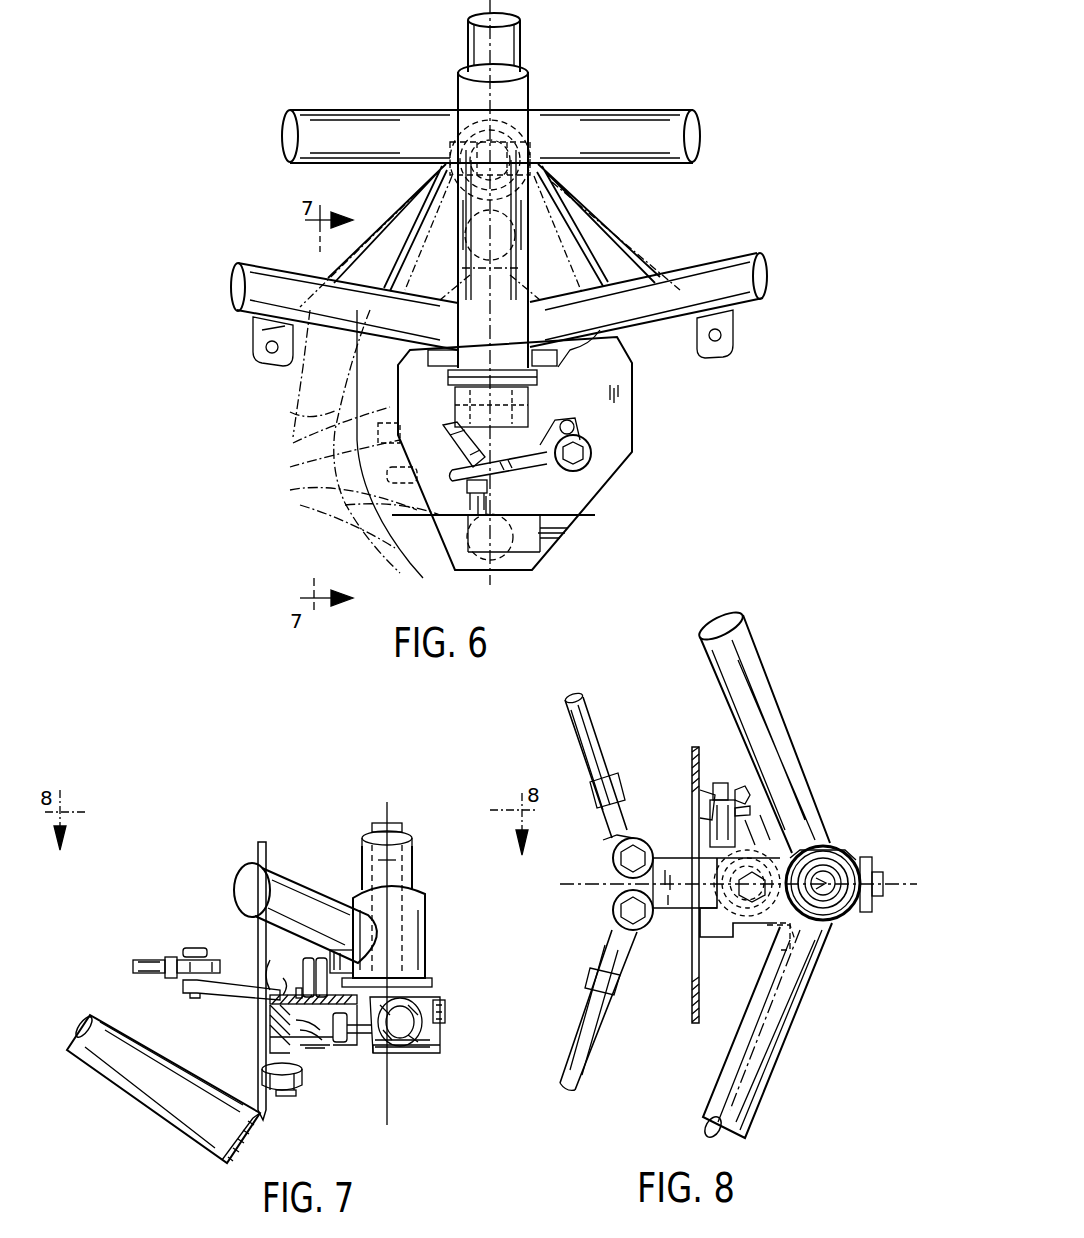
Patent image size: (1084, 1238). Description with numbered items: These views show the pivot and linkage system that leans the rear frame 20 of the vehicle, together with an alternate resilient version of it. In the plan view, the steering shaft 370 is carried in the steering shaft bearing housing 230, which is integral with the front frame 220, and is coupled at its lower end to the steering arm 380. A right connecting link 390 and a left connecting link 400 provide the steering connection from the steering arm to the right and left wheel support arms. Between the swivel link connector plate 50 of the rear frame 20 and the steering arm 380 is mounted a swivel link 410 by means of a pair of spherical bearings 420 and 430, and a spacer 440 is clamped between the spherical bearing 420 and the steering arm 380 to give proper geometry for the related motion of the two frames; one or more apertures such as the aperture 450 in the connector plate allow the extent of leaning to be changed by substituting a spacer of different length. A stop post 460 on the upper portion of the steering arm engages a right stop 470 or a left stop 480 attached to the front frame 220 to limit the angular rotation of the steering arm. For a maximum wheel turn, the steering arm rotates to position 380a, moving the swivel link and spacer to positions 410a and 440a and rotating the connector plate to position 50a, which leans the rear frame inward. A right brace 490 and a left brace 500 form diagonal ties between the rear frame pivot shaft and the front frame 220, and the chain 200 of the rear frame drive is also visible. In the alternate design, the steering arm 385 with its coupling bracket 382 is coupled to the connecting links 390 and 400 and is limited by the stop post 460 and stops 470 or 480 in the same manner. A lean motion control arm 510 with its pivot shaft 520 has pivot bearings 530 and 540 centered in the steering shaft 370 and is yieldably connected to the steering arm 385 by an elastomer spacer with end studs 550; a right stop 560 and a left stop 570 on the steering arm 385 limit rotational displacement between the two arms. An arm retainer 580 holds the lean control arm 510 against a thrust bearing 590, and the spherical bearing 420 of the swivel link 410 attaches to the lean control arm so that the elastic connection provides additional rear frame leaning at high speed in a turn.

In FIG. 6, the rear frame 20 is at (572, 516).
In FIG. 6, the swivel link connector plate 50 is at (633, 398).
In FIG. 7, the swivel link connector plate 50 is at (258, 1096).
In FIG. 8, the swivel link connector plate 50 is at (690, 757).
In FIG. 6, the swivel link connector plate position 50a is at (320, 405).
In FIG. 7, the chain 200 is at (133, 1103).
In FIG. 6, the front frame 220 is at (378, 108).
In FIG. 7, the front frame 220 is at (280, 884).
In FIG. 8, the front frame 220 is at (760, 664).
In FIG. 6, the steering shaft bearing housing 230 is at (530, 102).
In FIG. 7, the steering shaft bearing housing 230 is at (424, 922).
In FIG. 8, the steering shaft bearing housing 230 is at (850, 849).
In FIG. 6, the steering shaft 370 is at (521, 44).
In FIG. 7, the steering shaft 370 is at (413, 883).
In FIG. 8, the steering shaft 370 is at (830, 916).
In FIG. 6, the steering arm 380 is at (455, 414).
In FIG. 6, the steering arm position 380a is at (335, 430).
In FIG. 7, the coupling bracket 382 is at (237, 1000).
In FIG. 7, the steering arm 385 is at (297, 992).
In FIG. 7, the right connecting link 390 is at (155, 958).
In FIG. 8, the right connecting link 390 is at (590, 1052).
In FIG. 8, the left connecting link 400 is at (578, 744).
In FIG. 6, the swivel link 410 is at (556, 480).
In FIG. 7, the swivel link 410 is at (288, 1096).
In FIG. 8, the swivel link 410 is at (703, 834).
In FIG. 6, the swivel link position 410a is at (345, 505).
In FIG. 6, the spherical bearing 420 is at (447, 520).
In FIG. 6, the spherical bearing 430 is at (593, 458).
In FIG. 6, the spacer 440 is at (470, 492).
In FIG. 7, the spacer 440 is at (313, 1074).
In FIG. 6, the spacer position 440a is at (340, 468).
In FIG. 6, the aperture 450 is at (576, 428).
In FIG. 6, the stop post 460 is at (614, 342).
In FIG. 7, the stop post 460 is at (285, 992).
In FIG. 8, the stop post 460 is at (742, 905).
In FIG. 6, the right stop 470 is at (448, 375).
In FIG. 7, the right stop 470 is at (317, 950).
In FIG. 8, the right stop 470 is at (765, 950).
In FIG. 6, the left stop 480 is at (540, 377).
In FIG. 8, the left stop 480 is at (762, 818).
In FIG. 6, the right brace 490 is at (372, 240).
In FIG. 6, the left brace 500 is at (608, 232).
In FIG. 7, the lean motion control arm 510 is at (343, 1040).
In FIG. 7, the pivot shaft 520 is at (397, 822).
In FIG. 8, the pivot shaft 520 is at (837, 927).
In FIG. 7, the pivot bearing 530 is at (400, 1054).
In FIG. 7, the pivot bearing 540 is at (405, 838).
In FIG. 8, the pivot bearing 540 is at (823, 850).
In FIG. 7, the elastomer spacer end studs 550 is at (307, 1024).
In FIG. 7, the right stop 560 is at (347, 1036).
In FIG. 8, the right stop 560 is at (765, 937).
In FIG. 8, the left stop 570 is at (763, 830).
In FIG. 7, the arm retainer 580 is at (443, 1040).
In FIG. 8, the arm retainer 580 is at (875, 867).
In FIG. 7, the thrust bearing 590 is at (417, 1056).